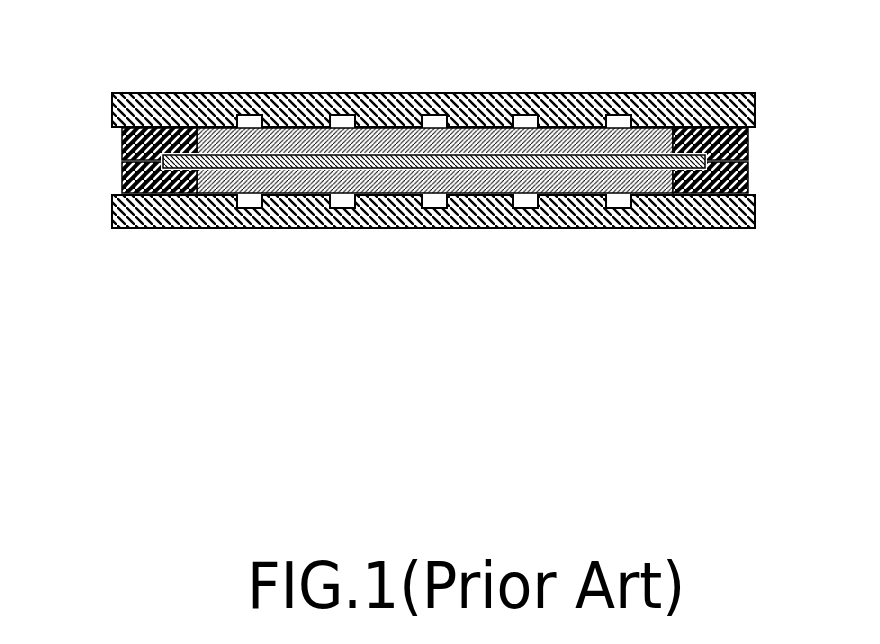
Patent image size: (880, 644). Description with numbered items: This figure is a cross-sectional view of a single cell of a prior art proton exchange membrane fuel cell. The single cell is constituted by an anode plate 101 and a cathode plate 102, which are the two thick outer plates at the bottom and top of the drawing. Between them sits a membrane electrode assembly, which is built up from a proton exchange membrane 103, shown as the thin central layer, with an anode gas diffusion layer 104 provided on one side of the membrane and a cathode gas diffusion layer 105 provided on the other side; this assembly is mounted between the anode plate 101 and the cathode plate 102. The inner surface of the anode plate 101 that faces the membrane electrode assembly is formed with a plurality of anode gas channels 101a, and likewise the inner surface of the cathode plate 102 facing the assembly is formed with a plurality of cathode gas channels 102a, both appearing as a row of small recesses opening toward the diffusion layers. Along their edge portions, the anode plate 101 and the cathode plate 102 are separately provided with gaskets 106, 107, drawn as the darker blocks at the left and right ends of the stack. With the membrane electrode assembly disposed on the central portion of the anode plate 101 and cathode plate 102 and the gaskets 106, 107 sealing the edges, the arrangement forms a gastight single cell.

The anode plate 101 is at (706, 228).
The anode gas channels 101a is at (613, 208).
The cathode plate 102 is at (648, 93).
The cathode gas channels 102a is at (437, 120).
The proton exchange membrane 103 is at (342, 168).
The anode gas diffusion layer 104 is at (435, 168).
The cathode gas diffusion layer 105 is at (292, 143).
The gasket 106 is at (122, 175).
The gasket 107 is at (122, 145).